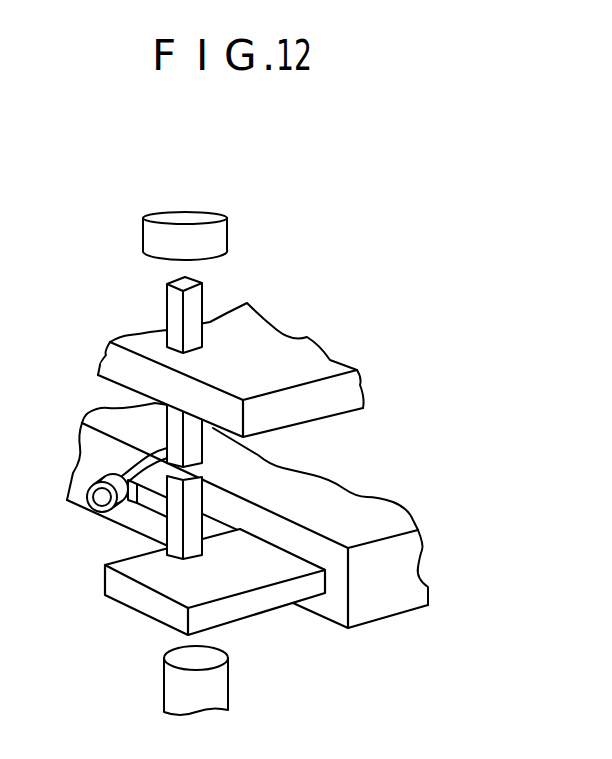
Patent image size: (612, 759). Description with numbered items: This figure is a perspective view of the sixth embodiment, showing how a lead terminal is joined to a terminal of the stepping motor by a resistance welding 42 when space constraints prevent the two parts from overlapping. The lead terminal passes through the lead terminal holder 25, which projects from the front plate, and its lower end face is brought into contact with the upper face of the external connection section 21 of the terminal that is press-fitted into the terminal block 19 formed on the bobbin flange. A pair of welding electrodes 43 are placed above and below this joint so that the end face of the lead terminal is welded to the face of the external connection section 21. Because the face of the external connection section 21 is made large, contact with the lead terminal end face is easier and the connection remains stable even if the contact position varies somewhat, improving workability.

The resistance welding apparatus 42 is at (240, 217).
The welding electrode 43 is at (208, 245).
The lead terminal holder 25 is at (258, 348).
The terminal block 19 is at (325, 508).
The external connection section 21 is at (262, 603).